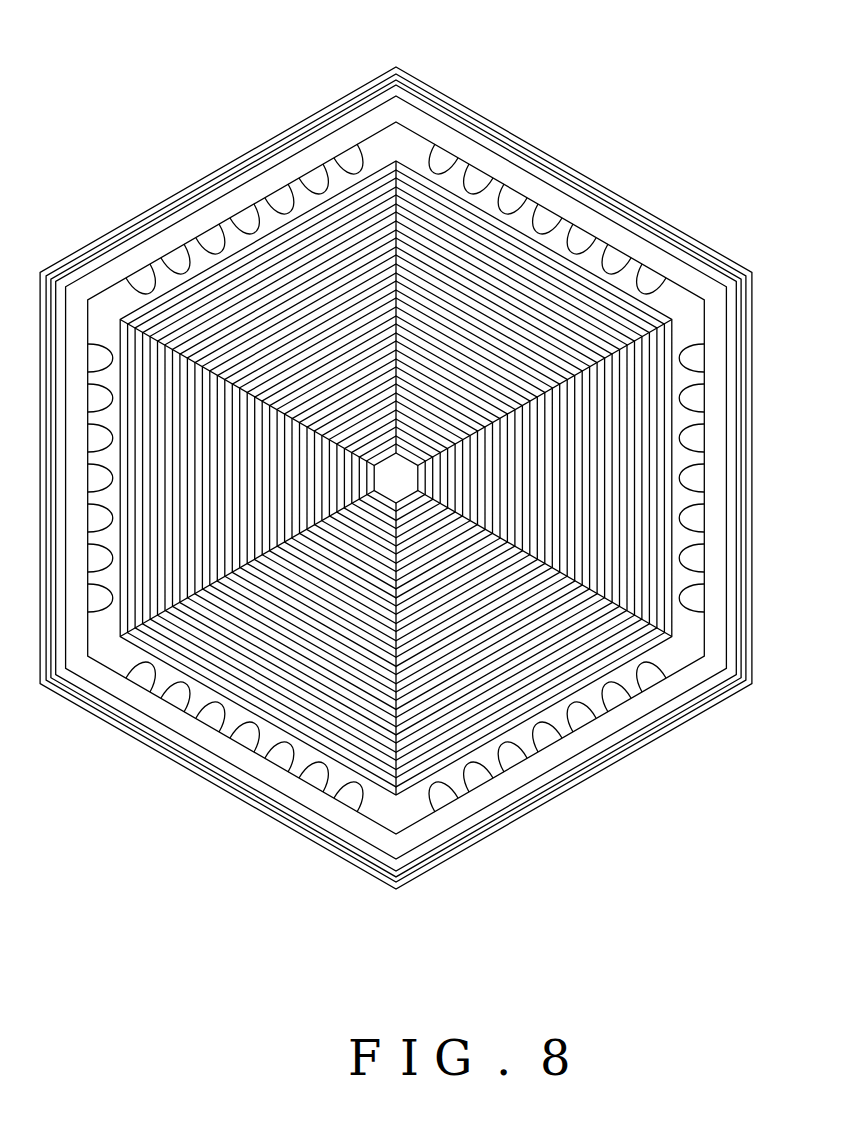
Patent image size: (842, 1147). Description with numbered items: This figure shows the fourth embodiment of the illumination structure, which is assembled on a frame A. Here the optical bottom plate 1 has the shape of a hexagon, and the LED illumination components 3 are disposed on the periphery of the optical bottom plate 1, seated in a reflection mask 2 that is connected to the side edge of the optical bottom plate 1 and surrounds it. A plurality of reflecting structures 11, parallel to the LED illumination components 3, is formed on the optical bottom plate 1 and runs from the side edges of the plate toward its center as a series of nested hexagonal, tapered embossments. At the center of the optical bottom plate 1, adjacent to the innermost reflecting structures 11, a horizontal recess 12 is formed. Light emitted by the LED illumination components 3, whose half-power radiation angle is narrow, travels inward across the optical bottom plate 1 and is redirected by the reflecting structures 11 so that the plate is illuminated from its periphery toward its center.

The optical bottom plate 1 is at (500, 200).
The reflecting structures 11 is at (413, 215).
The horizontal recess 12 is at (388, 472).
The reflection mask 2 is at (710, 262).
The LED illumination components 3 is at (652, 280).
The frame A is at (755, 302).